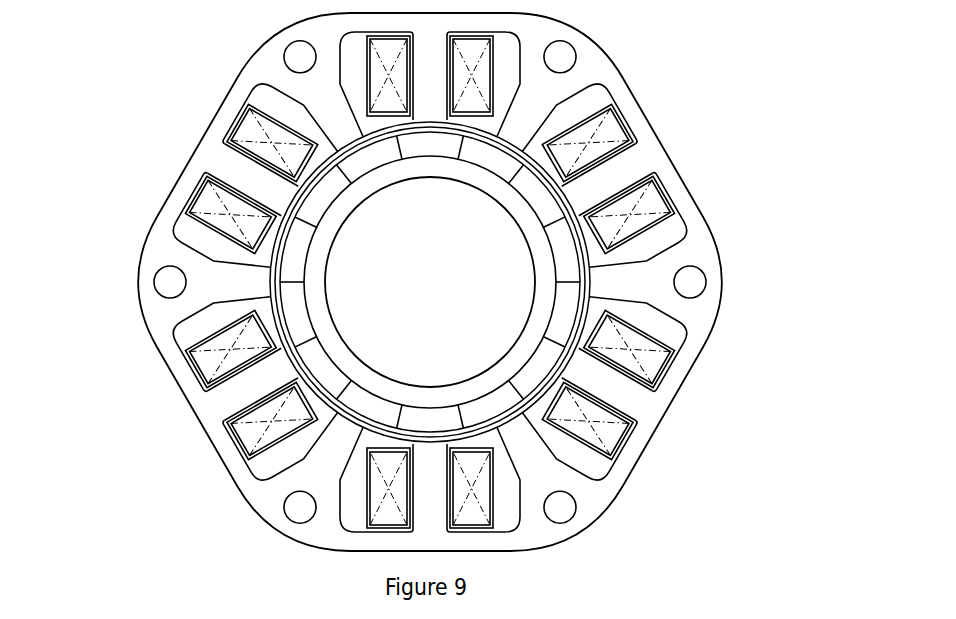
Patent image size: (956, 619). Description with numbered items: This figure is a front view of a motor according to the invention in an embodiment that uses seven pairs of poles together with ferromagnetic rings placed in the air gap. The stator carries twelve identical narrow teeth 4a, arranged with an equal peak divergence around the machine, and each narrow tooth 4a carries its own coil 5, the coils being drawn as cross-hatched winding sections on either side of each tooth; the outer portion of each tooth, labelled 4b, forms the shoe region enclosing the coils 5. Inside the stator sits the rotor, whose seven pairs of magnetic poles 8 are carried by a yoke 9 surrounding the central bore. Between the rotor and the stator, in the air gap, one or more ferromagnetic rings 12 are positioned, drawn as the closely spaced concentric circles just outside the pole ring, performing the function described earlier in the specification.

The narrow tooth 4a is at (612, 170).
The pole piece 4b is at (540, 110).
The coil 5 is at (625, 218).
The magnetic poles 8 is at (570, 277).
The yoke 9 is at (343, 216).
The ferromagnetic ring 12 is at (282, 328).